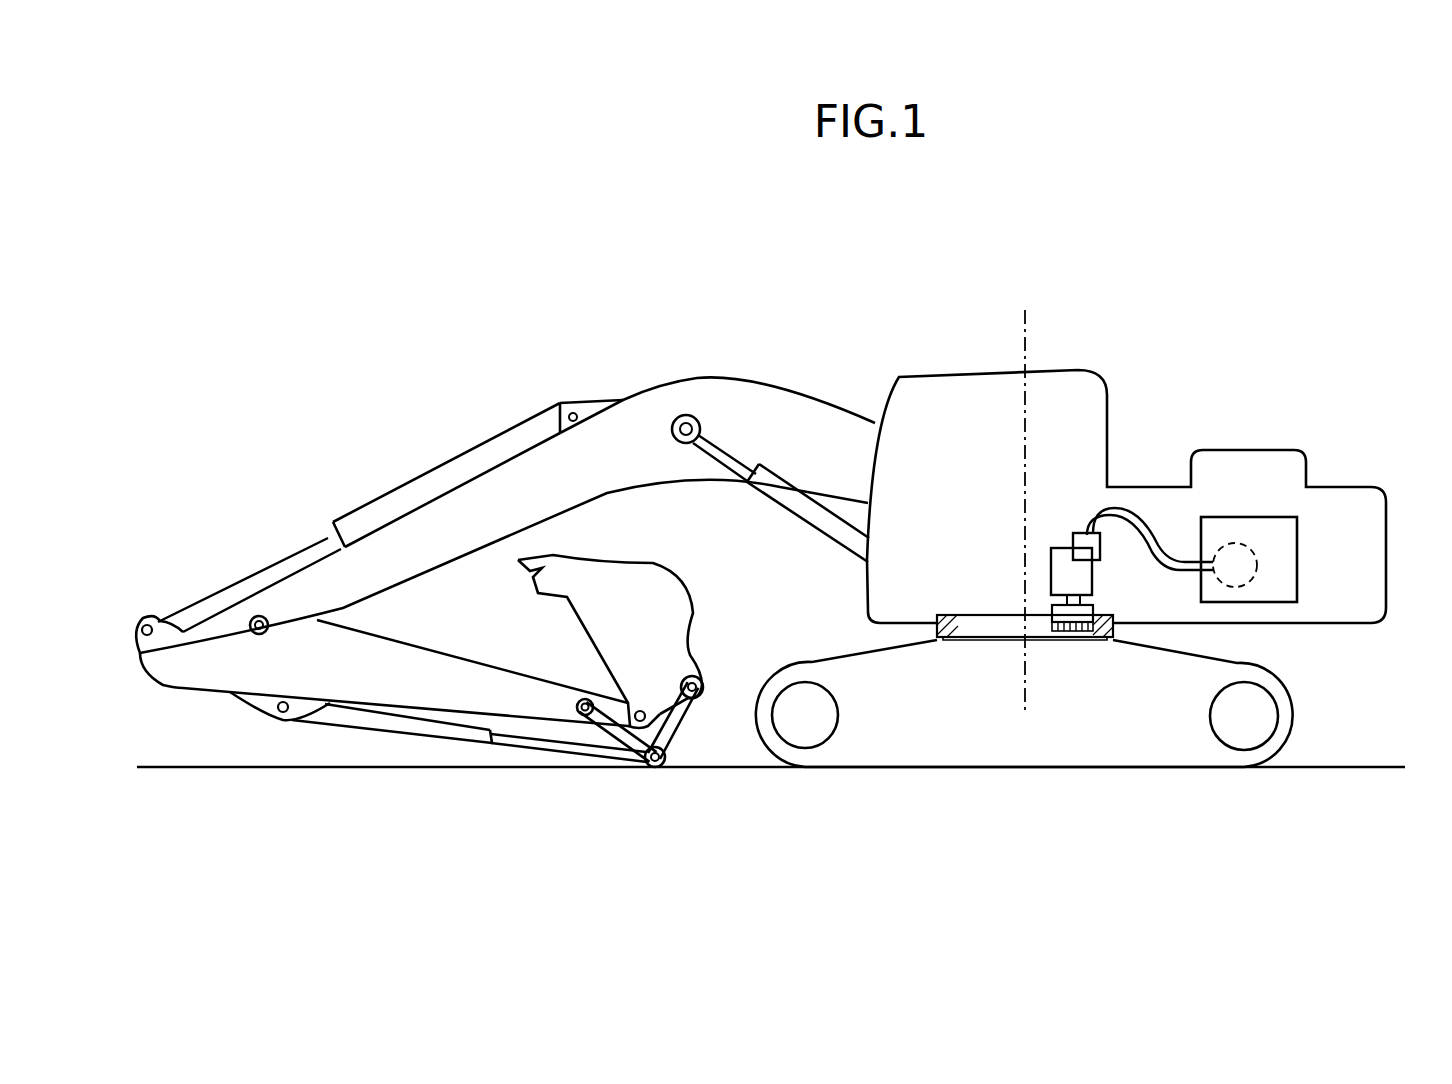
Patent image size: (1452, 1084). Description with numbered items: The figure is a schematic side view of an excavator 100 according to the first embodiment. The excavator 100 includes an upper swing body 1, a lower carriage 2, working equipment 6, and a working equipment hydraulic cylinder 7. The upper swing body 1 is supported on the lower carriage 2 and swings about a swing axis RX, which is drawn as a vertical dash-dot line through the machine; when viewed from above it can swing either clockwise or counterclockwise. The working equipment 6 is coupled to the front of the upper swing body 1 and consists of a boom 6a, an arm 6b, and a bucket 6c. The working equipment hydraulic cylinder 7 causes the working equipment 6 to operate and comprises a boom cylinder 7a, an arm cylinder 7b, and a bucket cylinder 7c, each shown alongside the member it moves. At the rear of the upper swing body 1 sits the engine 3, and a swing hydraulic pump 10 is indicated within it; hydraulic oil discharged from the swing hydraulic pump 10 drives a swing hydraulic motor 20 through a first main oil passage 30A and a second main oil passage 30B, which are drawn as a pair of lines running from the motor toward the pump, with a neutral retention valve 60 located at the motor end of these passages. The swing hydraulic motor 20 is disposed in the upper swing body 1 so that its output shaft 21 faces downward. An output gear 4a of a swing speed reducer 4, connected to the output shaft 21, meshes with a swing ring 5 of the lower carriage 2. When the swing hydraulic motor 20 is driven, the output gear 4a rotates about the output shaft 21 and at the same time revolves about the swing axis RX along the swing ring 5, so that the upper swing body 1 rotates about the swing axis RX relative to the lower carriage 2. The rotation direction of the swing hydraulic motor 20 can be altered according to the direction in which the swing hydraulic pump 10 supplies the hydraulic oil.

The excavator 100 is at (527, 258).
The upper swing body 1 is at (1107, 398).
The lower carriage 2 is at (1299, 714).
The engine 3 is at (1297, 558).
The swing speed reducer 4 is at (1080, 611).
The output gear 4a is at (1068, 632).
The swing ring 5 is at (947, 640).
The working equipment 6 is at (752, 380).
The boom 6a is at (682, 377).
The arm 6b is at (420, 645).
The bucket 6c is at (675, 572).
The working equipment hydraulic cylinder 7 is at (513, 571).
The boom cylinder 7a is at (800, 518).
The arm cylinder 7b is at (438, 468).
The bucket cylinder 7c is at (347, 728).
The swing hydraulic pump 10 is at (1244, 554).
The swing hydraulic motor 20 is at (1065, 558).
The output shaft 21 is at (1065, 598).
The first main oil passage 30A is at (1138, 515).
The second main oil passage 30B is at (1163, 568).
The neutral retention valve 60 is at (1083, 533).
The swing axis RX is at (1025, 342).